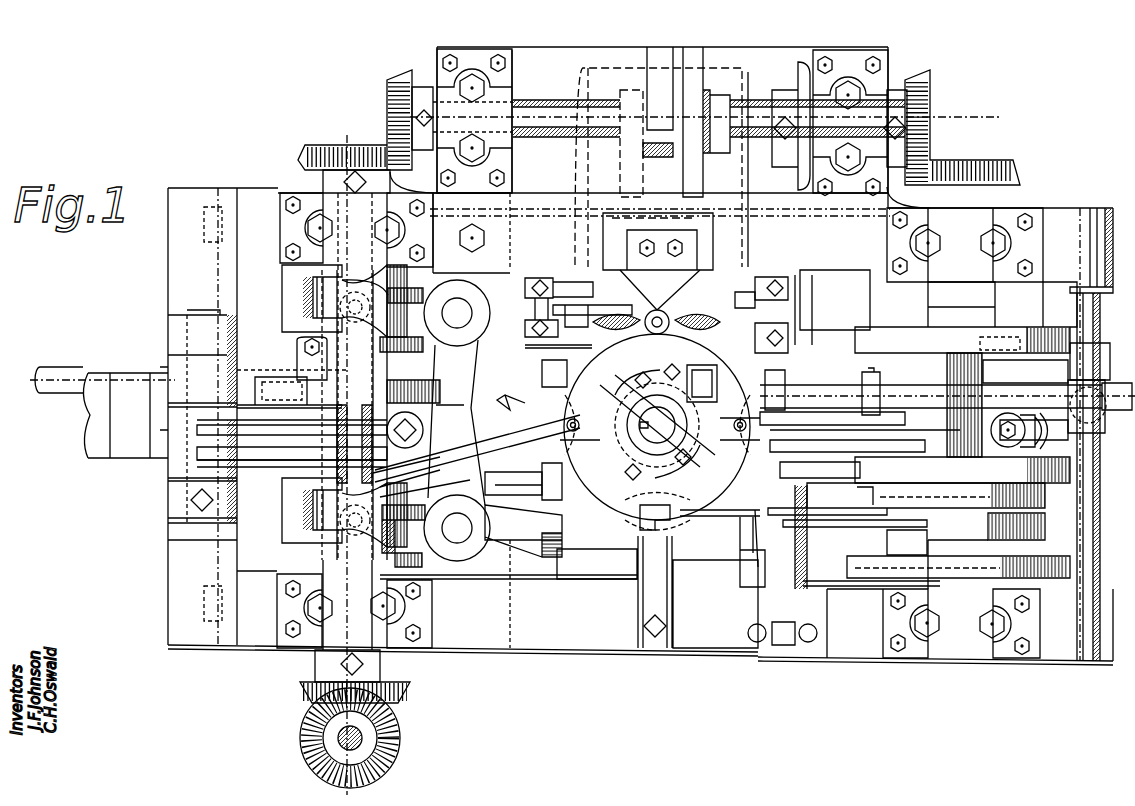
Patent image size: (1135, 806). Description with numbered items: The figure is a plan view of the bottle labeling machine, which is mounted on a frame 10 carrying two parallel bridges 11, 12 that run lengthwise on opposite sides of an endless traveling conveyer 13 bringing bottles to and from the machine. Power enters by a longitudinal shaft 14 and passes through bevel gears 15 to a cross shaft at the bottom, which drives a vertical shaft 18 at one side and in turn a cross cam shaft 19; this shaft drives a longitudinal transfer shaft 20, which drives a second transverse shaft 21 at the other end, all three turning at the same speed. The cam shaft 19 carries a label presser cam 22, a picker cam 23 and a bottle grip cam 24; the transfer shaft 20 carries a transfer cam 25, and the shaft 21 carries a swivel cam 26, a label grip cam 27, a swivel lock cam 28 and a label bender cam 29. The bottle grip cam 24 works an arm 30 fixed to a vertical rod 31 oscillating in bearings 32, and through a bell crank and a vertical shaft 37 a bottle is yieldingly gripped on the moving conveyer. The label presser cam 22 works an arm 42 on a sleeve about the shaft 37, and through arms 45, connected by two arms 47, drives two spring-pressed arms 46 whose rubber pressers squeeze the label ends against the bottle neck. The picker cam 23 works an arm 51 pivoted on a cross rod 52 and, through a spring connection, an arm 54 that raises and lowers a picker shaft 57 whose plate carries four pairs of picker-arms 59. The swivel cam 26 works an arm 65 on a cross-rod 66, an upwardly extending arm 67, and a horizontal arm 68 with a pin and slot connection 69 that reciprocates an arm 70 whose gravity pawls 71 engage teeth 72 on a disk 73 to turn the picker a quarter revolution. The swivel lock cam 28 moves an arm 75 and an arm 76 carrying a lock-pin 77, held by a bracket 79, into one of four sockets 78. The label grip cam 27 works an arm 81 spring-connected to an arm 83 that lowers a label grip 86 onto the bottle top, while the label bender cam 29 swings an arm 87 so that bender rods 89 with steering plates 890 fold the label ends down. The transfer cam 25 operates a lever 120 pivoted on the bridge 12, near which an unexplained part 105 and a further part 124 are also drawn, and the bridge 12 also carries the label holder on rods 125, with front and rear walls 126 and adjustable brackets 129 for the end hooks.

The frame 10 is at (168, 628).
The bridge 11 is at (550, 678).
The bridge 12 is at (830, 275).
The traveling conveyer 13 is at (88, 441).
The longitudinal shaft 14 is at (40, 380).
The bevel gears 15 is at (292, 444).
The vertical shaft 18 is at (402, 725).
The cross cam shaft 19 is at (406, 449).
The longitudinal transfer shaft 20 is at (540, 137).
The second transverse shaft 21 is at (947, 362).
The label presser cam 22 is at (300, 518).
The picker cam 23 is at (410, 370).
The bottle grip cam 24 is at (300, 298).
The transfer cam 25 is at (693, 50).
The swivel cam 26 is at (966, 211).
The label grip cam 27 is at (857, 496).
The swivel lock cam 28 is at (936, 548).
The label bender cam 29 is at (1040, 530).
The arm 30 is at (420, 295).
The vertical rod 31 is at (457, 313).
The bearings 32 is at (470, 248).
The vertical shaft 37 is at (457, 528).
The arm 42 is at (415, 543).
The arm 45 is at (523, 535).
The arm 46 is at (513, 484).
The arms 47 is at (456, 422).
The arm 51 is at (292, 431).
The cross rod 52 is at (210, 518).
The arm 54 is at (388, 456).
The picker shaft 57 is at (657, 427).
The picker-arms 59 is at (542, 366).
The arm 65 is at (1025, 400).
The cross-rod 66 is at (1085, 305).
The upwardly extending arm 67 is at (1112, 392).
The horizontal arm 68 is at (765, 372).
The pin and slot connection 69 is at (872, 382).
The arm 70 is at (697, 402).
The gravity pawls 71 is at (656, 421).
The teeth 72 is at (651, 424).
The disk 73 is at (570, 449).
The arm 75 is at (805, 527).
The arm 76 is at (693, 512).
The lock-pin 77 is at (640, 510).
The sockets 78 is at (657, 362).
The bracket 79 is at (640, 607).
The arm 81 is at (1040, 437).
The arm 83 is at (962, 470).
The label grip 86 is at (865, 440).
The arm 87 is at (887, 540).
The bender rod 89 is at (820, 443).
The valve body 105 is at (578, 88).
The lever 120 is at (650, 47).
The spring leaf 124 is at (790, 195).
The rods 125 is at (798, 312).
The front and rear wall 126 is at (798, 340).
The brackets 129 is at (580, 308).
The steering plates 890 is at (812, 431).